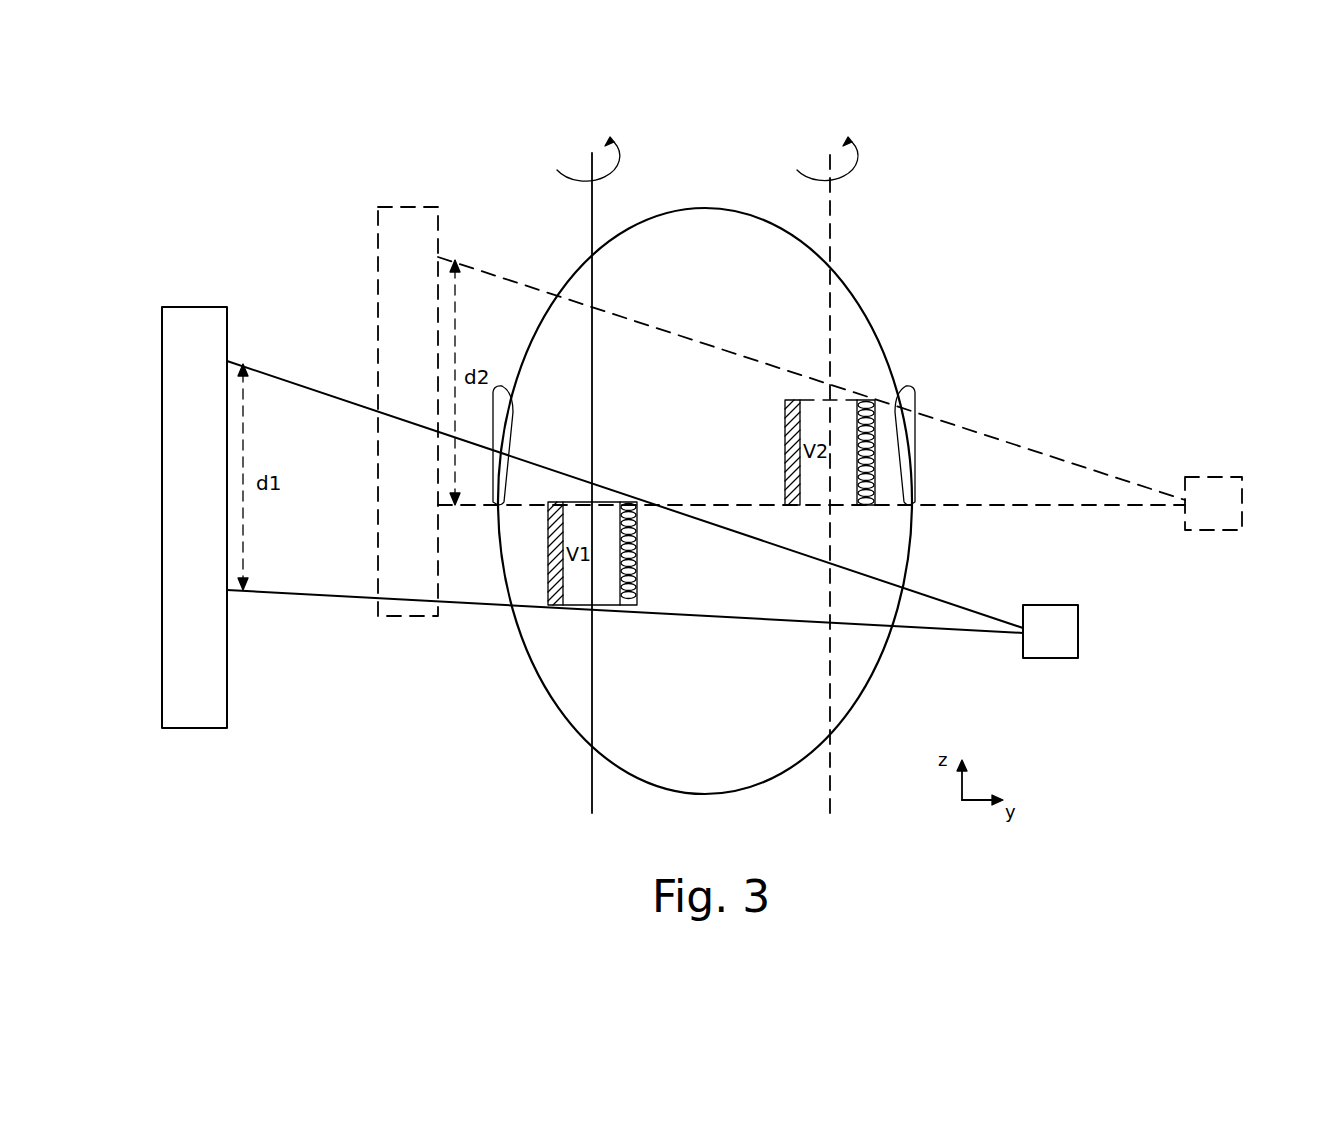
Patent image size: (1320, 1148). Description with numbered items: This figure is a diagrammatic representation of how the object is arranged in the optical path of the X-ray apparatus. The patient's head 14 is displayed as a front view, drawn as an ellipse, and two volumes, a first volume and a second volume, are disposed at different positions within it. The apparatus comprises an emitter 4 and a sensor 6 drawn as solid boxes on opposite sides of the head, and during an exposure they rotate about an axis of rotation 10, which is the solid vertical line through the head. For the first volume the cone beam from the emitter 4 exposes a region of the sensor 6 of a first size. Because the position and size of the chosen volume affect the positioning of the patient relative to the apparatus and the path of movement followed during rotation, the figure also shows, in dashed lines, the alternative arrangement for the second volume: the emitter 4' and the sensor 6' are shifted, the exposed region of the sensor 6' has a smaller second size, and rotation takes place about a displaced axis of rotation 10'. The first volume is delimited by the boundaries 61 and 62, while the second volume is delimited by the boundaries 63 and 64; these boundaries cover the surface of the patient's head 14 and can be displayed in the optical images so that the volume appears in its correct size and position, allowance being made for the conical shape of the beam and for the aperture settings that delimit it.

The emitter 4 is at (1163, 683).
The emitter 4' is at (1247, 465).
The sensor 6 is at (174, 591).
The sensor 6' is at (367, 363).
The axis of rotation 10 is at (560, 506).
The axis of rotation 10' is at (864, 464).
The patient's head 14 is at (563, 713).
The boundary 61 is at (548, 548).
The boundary 62 is at (640, 548).
The boundary 63 is at (785, 432).
The boundary 64 is at (868, 437).